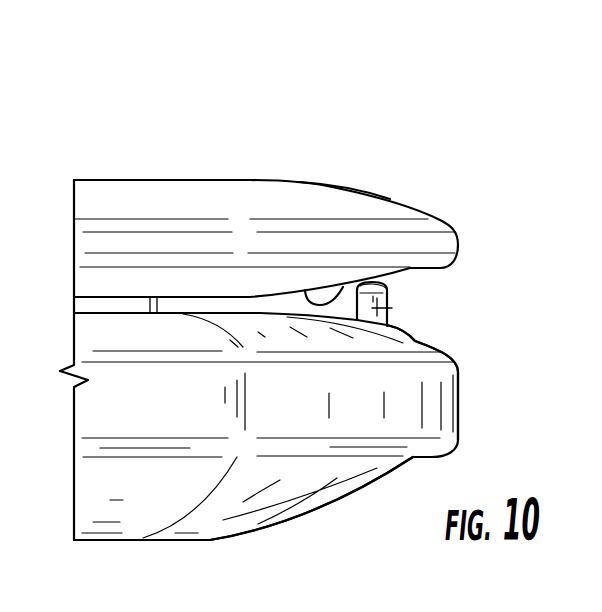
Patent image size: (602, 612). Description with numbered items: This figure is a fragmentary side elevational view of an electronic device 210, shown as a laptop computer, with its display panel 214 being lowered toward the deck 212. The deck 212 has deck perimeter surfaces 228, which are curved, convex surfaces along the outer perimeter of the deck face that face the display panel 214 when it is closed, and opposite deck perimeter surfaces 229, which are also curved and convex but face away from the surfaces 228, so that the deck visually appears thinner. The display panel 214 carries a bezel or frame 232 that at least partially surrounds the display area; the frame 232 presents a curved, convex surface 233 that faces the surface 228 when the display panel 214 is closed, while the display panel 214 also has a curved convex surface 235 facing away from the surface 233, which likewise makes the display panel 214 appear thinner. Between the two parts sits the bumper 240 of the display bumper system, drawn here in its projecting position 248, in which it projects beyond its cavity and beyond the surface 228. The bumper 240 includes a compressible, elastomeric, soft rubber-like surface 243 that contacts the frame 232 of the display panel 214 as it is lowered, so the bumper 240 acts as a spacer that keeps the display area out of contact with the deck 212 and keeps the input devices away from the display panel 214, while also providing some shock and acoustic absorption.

The electronic device 210 is at (153, 128).
The deck 212 is at (222, 513).
The display panel 214 is at (210, 178).
The deck perimeter surfaces 228 is at (408, 338).
The deck perimeter surfaces 229 is at (333, 505).
The frame 232 is at (383, 283).
The curved convex surface 233 is at (343, 287).
The curved convex surface 235 is at (337, 186).
The bumper 240 is at (382, 307).
The rubber-like surface 243 is at (390, 293).
The projecting position 248 is at (459, 68).